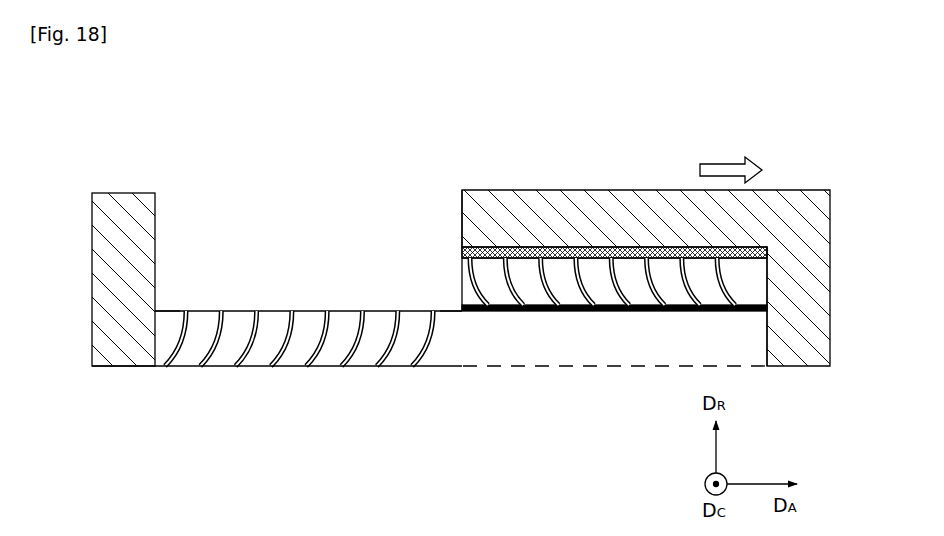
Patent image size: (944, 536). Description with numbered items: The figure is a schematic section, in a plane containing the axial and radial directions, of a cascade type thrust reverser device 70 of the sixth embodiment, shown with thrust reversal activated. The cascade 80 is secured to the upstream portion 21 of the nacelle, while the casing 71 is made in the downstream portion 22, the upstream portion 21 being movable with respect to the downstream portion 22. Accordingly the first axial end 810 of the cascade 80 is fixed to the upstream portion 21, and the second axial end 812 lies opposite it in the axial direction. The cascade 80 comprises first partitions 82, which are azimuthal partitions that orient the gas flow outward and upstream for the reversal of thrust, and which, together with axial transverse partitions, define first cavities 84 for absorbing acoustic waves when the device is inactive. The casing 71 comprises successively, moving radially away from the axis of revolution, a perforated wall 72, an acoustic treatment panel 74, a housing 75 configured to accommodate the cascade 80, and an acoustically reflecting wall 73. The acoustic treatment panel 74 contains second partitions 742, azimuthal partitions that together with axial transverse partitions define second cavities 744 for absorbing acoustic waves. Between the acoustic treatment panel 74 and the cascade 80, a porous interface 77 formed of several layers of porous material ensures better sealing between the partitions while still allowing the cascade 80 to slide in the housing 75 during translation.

The upstream portion 21 is at (107, 232).
The downstream portion 22 is at (818, 231).
The thrust reverser device 70 is at (746, 139).
The casing 71 is at (770, 282).
The perforated wall 72 is at (633, 368).
The acoustically reflecting wall 73 is at (768, 252).
The acoustic treatment panel 74 is at (602, 230).
The second partitions 742 is at (546, 263).
The second cavities 744 is at (600, 274).
The housing 75 is at (548, 339).
The porous interface 77 is at (768, 309).
The cascade 80 is at (308, 301).
The first axial end 810 is at (159, 308).
The second axial end 812 is at (458, 308).
The first partitions 82 is at (335, 308).
The first cavities 84 is at (238, 333).